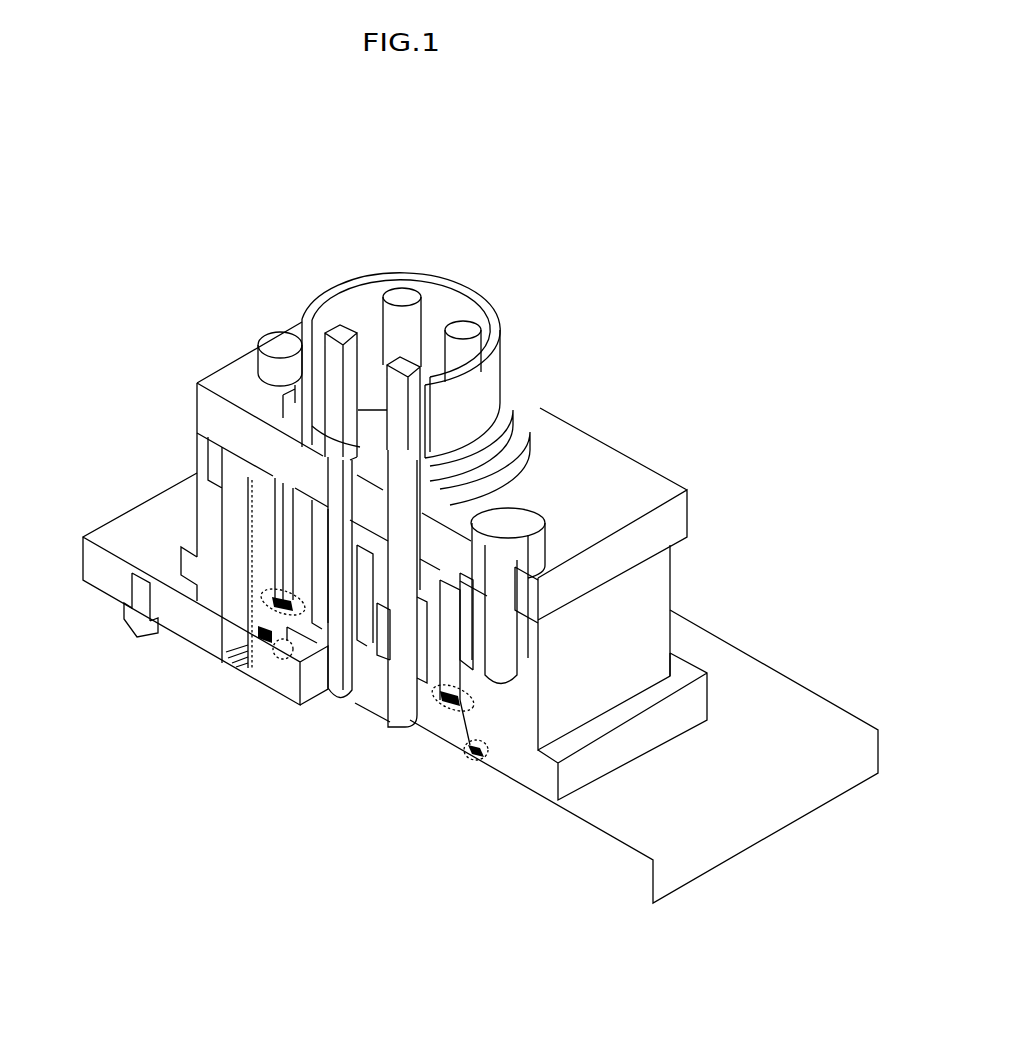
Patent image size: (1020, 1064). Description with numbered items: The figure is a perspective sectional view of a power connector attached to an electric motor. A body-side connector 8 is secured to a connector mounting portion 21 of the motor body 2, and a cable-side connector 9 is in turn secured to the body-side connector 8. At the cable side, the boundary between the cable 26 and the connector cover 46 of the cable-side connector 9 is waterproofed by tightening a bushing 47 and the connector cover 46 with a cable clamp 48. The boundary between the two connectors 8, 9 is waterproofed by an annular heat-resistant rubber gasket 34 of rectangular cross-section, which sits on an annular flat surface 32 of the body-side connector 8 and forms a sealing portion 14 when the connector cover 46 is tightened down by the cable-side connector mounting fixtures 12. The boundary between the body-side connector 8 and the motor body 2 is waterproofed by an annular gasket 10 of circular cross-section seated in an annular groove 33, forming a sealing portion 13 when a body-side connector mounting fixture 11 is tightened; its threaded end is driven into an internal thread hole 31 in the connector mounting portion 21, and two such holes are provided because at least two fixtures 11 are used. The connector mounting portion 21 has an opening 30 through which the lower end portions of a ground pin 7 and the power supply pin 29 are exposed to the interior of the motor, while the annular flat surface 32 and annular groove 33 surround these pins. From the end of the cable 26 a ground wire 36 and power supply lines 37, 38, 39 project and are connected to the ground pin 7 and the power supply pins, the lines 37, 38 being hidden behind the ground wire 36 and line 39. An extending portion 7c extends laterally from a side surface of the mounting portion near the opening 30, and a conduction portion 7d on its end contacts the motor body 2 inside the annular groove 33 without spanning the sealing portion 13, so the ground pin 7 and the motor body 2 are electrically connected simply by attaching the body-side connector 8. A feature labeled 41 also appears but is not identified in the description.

The motor body 2 is at (767, 745).
The ground pin 7 is at (337, 697).
The extending portion 7c is at (312, 645).
The conduction portion 7d is at (278, 653).
The body-side connector 8 is at (650, 590).
The cable-side connector 9 is at (425, 577).
The gasket 10 is at (262, 640).
The body-side connector mounting fixture 11 is at (231, 486).
The cable-side connector mounting fixture 12 is at (292, 355).
The sealing portion 13 is at (467, 763).
The sealing portion 14 is at (268, 602).
The connector mounting portion 21 is at (177, 590).
The cable 26 is at (502, 357).
The power supply pin 29 is at (402, 740).
The opening 30 is at (367, 727).
The internal thread hole 31 is at (232, 662).
The annular flat surface 32 is at (468, 703).
The annular groove 33 is at (483, 755).
The gasket 34 is at (453, 710).
The ground wire 36 is at (347, 335).
The power supply line 37 is at (397, 295).
The power supply line 38 is at (467, 323).
The power supply line 39 is at (414, 363).
The pin tip 41 is at (290, 667).
The connector cover 46 is at (648, 498).
The bushing 47 is at (510, 418).
The cable clamp 48 is at (533, 433).